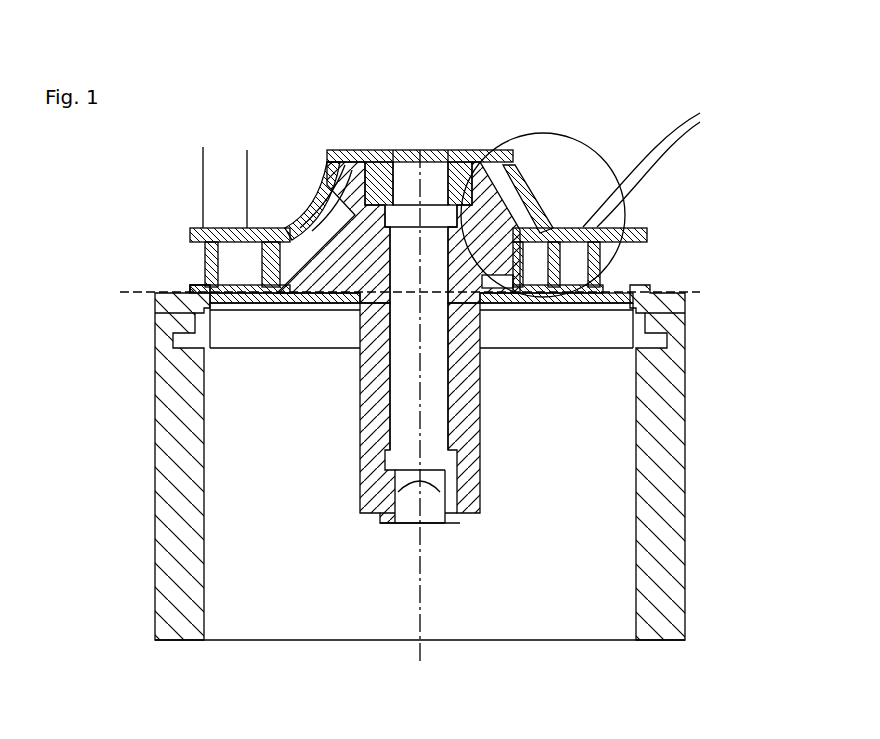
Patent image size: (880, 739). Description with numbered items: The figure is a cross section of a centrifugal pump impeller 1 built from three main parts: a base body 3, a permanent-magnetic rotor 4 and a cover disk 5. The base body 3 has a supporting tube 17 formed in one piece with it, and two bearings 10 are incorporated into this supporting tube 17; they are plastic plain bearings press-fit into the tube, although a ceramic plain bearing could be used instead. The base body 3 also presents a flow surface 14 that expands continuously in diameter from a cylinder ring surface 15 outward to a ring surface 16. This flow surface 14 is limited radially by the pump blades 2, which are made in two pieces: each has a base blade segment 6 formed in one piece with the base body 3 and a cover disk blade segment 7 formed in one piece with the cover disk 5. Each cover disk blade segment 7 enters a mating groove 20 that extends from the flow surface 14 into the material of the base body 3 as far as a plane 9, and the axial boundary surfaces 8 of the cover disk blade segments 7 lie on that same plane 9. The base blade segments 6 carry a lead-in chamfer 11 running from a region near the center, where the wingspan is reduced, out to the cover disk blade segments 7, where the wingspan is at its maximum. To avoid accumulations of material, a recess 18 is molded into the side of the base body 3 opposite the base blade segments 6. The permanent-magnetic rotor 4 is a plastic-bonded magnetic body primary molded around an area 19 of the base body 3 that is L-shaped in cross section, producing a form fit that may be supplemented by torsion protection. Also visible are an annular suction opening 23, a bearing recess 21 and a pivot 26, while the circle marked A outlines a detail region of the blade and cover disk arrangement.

The centrifugal pump impeller 1 is at (667, 94).
The pump blades 2 is at (565, 242).
The base body 3 is at (346, 224).
The permanent-magnetic rotor 4 is at (153, 533).
The cover disk 5 is at (178, 227).
The base blade segment 6 is at (280, 232).
The cover disk blade segment 7 is at (598, 263).
The axial boundary surfaces 8 is at (203, 292).
The plane 9 is at (140, 294).
The bearings 10 is at (420, 150).
The lead-in chamfer 11 is at (498, 268).
The flow surface 14 is at (270, 276).
The cylinder ring surface 15 is at (330, 152).
The ring surface 16 is at (202, 283).
The supporting tube 17 is at (367, 417).
The recess 18 is at (505, 303).
The area of the base body 19 is at (637, 343).
The mating grooves 20 is at (203, 147).
The bearing recess 21 is at (405, 152).
The annular suction opening 23 is at (348, 160).
The pivot 26 is at (420, 592).
The detail region A is at (620, 187).